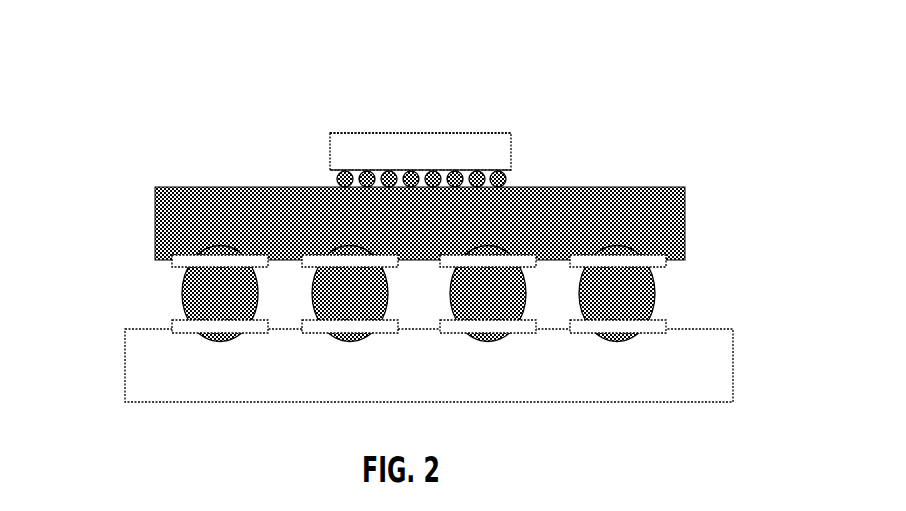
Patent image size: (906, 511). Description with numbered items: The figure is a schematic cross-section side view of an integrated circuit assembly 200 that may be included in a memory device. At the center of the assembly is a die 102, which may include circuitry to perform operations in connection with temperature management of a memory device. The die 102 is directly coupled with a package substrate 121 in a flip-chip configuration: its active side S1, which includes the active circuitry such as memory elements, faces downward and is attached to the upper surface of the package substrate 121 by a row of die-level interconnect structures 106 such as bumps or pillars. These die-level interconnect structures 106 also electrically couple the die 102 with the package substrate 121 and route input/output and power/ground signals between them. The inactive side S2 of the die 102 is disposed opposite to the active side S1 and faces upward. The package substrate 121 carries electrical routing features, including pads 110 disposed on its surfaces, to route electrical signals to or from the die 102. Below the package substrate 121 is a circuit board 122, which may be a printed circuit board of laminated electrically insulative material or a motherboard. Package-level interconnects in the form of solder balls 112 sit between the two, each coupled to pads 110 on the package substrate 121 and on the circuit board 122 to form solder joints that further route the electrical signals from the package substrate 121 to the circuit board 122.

The integrated circuit assembly 200 is at (405, 205).
The die 102 is at (454, 135).
The die-level interconnect structures 106 is at (336, 179).
The package substrate 121 is at (435, 237).
The circuit board 122 is at (437, 381).
The pads 110 is at (183, 268).
The solder balls 112 is at (185, 295).
The active side S1 is at (519, 168).
The inactive side S2 is at (516, 129).